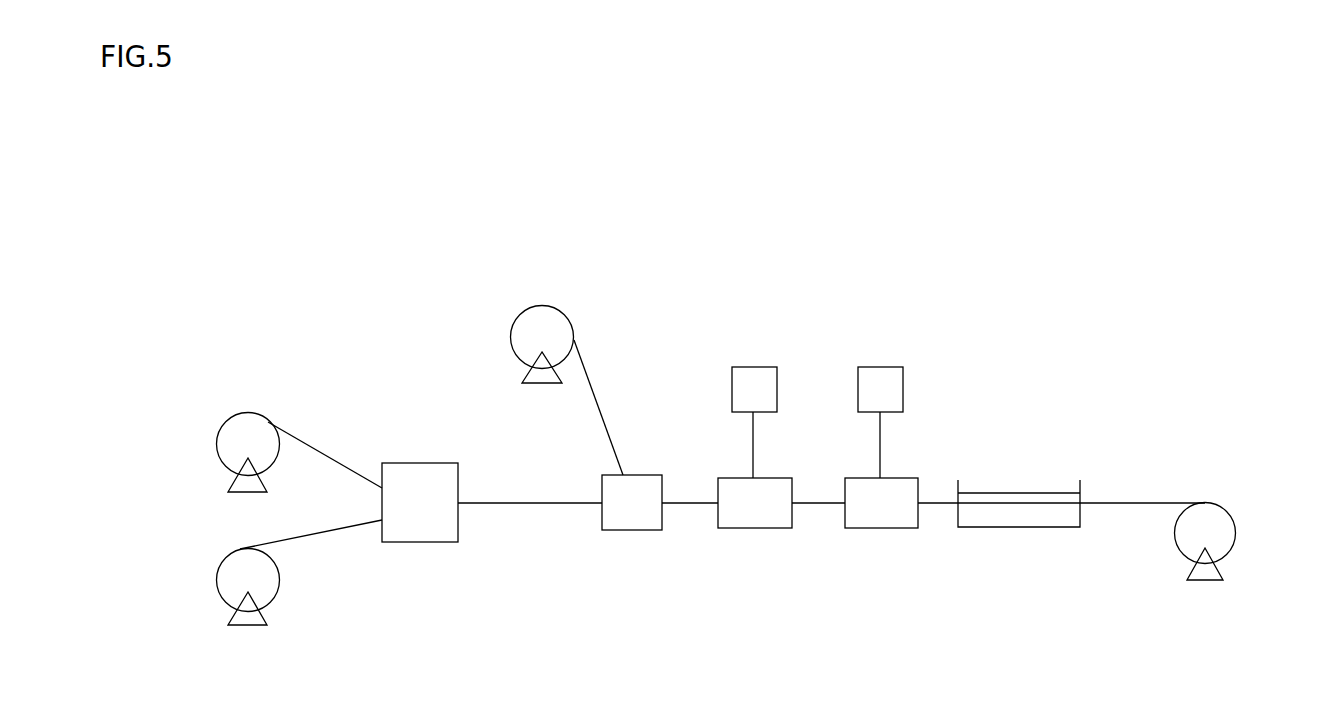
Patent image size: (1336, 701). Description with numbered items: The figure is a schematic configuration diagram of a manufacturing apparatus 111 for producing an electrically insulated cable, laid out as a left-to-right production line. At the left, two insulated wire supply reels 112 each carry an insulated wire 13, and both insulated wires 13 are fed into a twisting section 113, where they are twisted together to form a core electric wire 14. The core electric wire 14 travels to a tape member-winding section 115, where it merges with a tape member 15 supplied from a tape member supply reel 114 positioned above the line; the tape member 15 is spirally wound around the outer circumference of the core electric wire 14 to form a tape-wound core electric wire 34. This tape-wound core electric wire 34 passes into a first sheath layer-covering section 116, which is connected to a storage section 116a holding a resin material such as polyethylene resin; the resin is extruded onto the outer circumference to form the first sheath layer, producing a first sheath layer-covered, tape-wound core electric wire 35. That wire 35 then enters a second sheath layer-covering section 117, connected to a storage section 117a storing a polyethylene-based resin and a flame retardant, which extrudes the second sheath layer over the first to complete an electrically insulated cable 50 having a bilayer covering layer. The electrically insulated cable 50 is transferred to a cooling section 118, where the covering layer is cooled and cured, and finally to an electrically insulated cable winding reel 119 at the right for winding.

The manufacturing apparatus 111 is at (722, 230).
The insulated wire supply reel 112 is at (225, 445).
The insulated wire 13 is at (332, 455).
The twisting section 113 is at (420, 475).
The core electric wire 14 is at (525, 507).
The tape member supply reel 114 is at (542, 317).
The tape member 15 is at (587, 355).
The tape member-winding section 115 is at (632, 522).
The tape-wound core electric wire 34 is at (690, 500).
The first sheath layer-covering section 116 is at (753, 518).
The storage section 116a is at (763, 375).
The first sheath layer-covered, tape-wound core electric wire 35 is at (820, 500).
The second sheath layer-covering section 117 is at (882, 518).
The storage section 117a is at (878, 375).
The cooling section 118 is at (1012, 517).
The electrically insulated cable 50 is at (1128, 501).
The electrically insulated cable winding reel 119 is at (1223, 537).